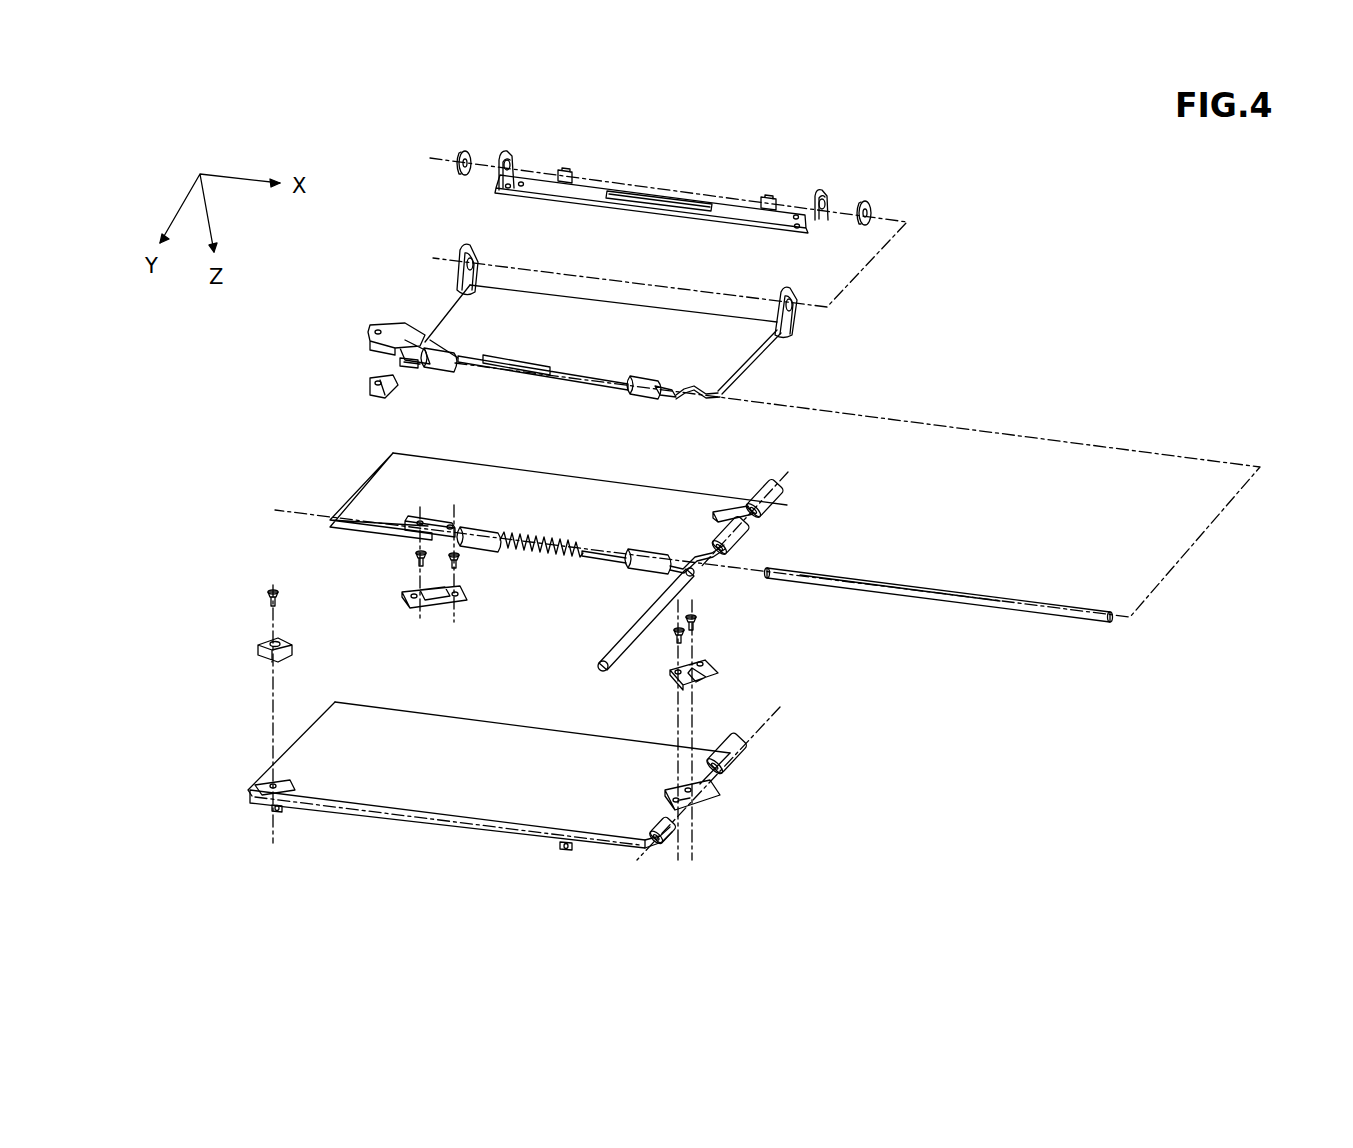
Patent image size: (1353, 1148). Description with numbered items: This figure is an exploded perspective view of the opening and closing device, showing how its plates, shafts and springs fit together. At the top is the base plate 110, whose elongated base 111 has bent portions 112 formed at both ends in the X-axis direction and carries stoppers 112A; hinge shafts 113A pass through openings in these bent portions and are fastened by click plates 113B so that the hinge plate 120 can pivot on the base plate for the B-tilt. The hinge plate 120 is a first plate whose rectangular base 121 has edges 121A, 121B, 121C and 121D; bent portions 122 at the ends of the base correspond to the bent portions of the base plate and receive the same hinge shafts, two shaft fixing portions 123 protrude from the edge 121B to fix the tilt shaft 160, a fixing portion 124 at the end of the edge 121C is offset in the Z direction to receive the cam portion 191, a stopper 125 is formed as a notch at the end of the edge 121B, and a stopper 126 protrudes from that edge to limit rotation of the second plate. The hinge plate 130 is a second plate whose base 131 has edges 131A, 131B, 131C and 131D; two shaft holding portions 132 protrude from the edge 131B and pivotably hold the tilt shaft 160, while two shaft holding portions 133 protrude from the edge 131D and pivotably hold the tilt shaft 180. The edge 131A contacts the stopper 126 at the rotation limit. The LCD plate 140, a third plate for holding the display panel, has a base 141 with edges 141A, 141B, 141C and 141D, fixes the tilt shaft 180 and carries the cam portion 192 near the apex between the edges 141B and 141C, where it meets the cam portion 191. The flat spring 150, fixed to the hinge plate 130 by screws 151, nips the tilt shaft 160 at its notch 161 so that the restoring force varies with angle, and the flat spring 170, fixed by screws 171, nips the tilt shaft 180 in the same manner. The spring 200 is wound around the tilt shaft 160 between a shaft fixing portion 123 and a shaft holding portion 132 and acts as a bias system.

The base plate 110 is at (673, 144).
The base 111 is at (728, 205).
The bent portions 112 is at (510, 165).
The stoppers 112A is at (497, 160).
The hinge shafts 113A is at (565, 172).
The click plates 113B is at (462, 152).
The hinge plate 120 is at (593, 347).
The base 121 is at (613, 345).
The edge 121A is at (660, 302).
The edge 121B is at (590, 380).
The edge 121C is at (443, 315).
The edge 121D is at (745, 360).
The bent portions 122 is at (458, 278).
The shaft fixing portions 123 is at (437, 368).
The fixing portion 124 is at (385, 330).
The stopper 125 is at (720, 400).
The stopper 126 is at (400, 365).
The hinge plate 130 is at (562, 511).
The base 131 is at (558, 511).
The edge 131A is at (513, 468).
The edge 131B is at (605, 560).
The edge 131C is at (360, 490).
The edge 131D is at (765, 520).
The shaft holding portions 132 is at (487, 545).
The shaft holding portions 133 is at (790, 508).
The LCD plate 140 is at (501, 782).
The base 141 is at (501, 772).
The edge 141A is at (437, 705).
The edge 141B is at (410, 822).
The edge 141C is at (273, 752).
The edge 141D is at (720, 795).
The flat spring 150 is at (432, 608).
The screws 151 is at (405, 556).
The tilt shaft 160 is at (939, 606).
The notch 161 is at (860, 575).
The flat spring 170 is at (715, 672).
The screws 171 is at (693, 618).
The tilt shaft 180 is at (630, 630).
The cam portion 191 is at (370, 385).
The cam portion 192 is at (290, 652).
The spring 200 is at (552, 565).